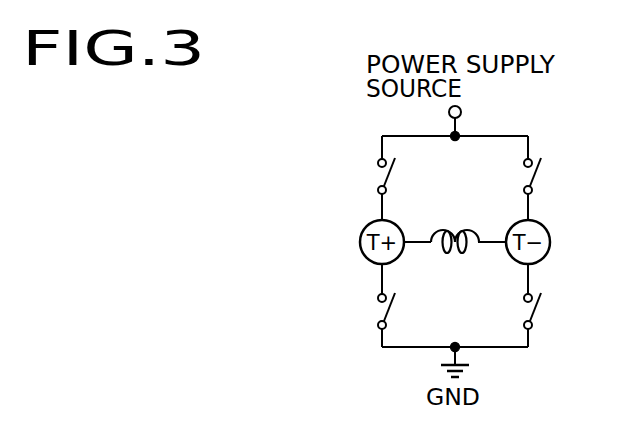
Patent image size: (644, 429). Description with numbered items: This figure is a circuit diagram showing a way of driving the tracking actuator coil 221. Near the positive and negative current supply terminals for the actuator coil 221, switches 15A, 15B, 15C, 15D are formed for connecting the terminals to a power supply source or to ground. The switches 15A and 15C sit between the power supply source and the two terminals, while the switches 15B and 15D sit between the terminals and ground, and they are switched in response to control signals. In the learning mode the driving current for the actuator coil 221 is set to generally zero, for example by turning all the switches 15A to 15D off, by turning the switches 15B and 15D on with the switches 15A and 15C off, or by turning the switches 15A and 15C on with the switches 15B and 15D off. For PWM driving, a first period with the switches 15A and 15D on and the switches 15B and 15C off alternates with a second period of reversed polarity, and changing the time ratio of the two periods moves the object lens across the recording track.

The switch 15A is at (370, 175).
The switch 15B is at (370, 311).
The switch 15C is at (540, 178).
The switch 15D is at (540, 313).
The actuator coil 221 is at (453, 220).